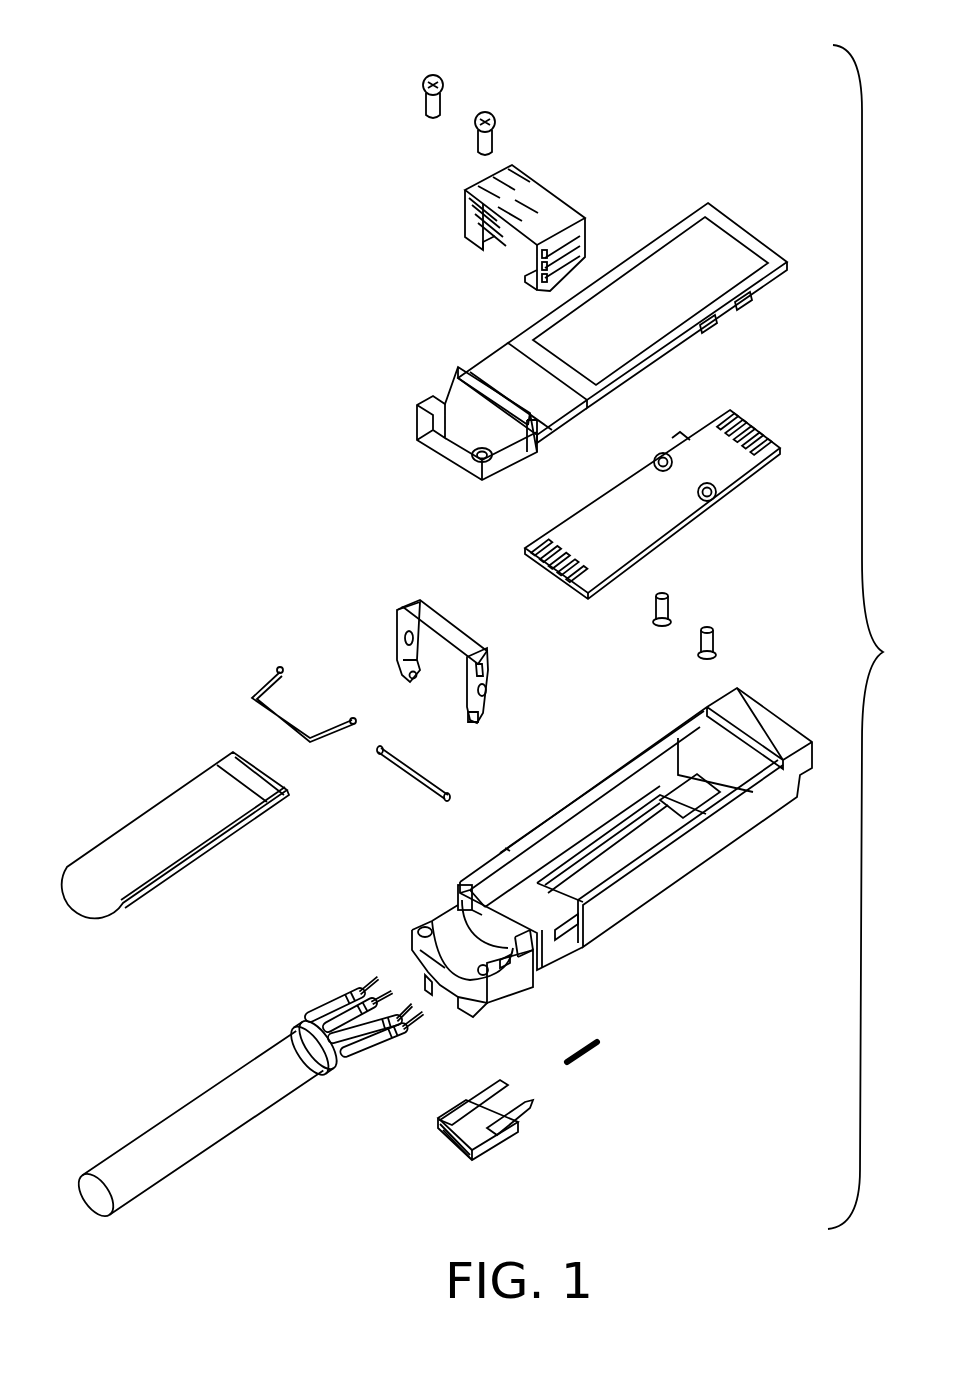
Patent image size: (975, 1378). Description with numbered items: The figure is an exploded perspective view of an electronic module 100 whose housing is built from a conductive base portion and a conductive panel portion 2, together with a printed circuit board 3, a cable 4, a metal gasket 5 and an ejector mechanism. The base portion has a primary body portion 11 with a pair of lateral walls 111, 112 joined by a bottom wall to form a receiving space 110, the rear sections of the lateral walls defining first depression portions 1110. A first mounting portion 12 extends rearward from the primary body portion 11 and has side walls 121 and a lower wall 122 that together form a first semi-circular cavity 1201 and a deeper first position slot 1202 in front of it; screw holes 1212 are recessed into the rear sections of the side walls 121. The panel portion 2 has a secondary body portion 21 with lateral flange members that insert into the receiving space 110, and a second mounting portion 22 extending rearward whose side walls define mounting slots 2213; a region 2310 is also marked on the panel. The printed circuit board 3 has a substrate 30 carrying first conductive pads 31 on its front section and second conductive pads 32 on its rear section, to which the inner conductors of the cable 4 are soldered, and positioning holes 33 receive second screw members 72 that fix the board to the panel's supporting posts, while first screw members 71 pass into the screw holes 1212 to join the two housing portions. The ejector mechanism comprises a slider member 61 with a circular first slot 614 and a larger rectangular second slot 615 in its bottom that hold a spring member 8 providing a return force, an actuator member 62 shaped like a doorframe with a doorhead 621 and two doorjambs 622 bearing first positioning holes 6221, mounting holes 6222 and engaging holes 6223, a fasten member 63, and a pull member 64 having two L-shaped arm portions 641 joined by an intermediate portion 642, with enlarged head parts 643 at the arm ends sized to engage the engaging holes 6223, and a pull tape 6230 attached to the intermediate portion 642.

The electronic module 100 is at (886, 637).
The primary body portion 11 is at (647, 832).
The receiving space 110 is at (627, 837).
The lateral wall 111 is at (707, 813).
The first depression portion 1110 is at (555, 937).
The lateral wall 112 is at (632, 762).
The first mounting portion 12 is at (459, 970).
The side wall 121 is at (502, 968).
The lower wall 122 is at (485, 993).
The first semi-circular cavity 1201 is at (443, 958).
The first position slot 1202 is at (473, 950).
The screw hole 1212 is at (427, 930).
The panel portion 2 is at (609, 306).
The secondary body portion 21 is at (705, 233).
The second mounting portion 22 is at (456, 425).
The mounting slot 2213 is at (467, 450).
The stepped portion 2310 is at (507, 370).
The printed circuit board 3 is at (651, 481).
The substrate 30 is at (677, 530).
The first conductive pads 31 is at (748, 425).
The second conductive pads 32 is at (543, 540).
The positioning hole 33 is at (720, 487).
The cable 4 is at (250, 1142).
The metal gasket 5 is at (568, 168).
The slider member 61 is at (496, 1140).
The first slot 614 is at (473, 1118).
The second slot 615 is at (520, 1102).
The actuator member 62 is at (494, 657).
The doorhead 621 is at (433, 620).
The doorjamb 622 is at (490, 653).
The first positioning hole 6221 is at (483, 685).
The mounting hole 6222 is at (477, 713).
The engaging hole 6223 is at (480, 670).
The pull tape 6230 is at (153, 805).
The fasten member 63 is at (397, 790).
The pull member 64 is at (280, 711).
The arm portion 641 is at (337, 730).
The intermediate portion 642 is at (277, 718).
The head part 643 is at (273, 665).
The first screw member 71 is at (462, 66).
The second screw member 72 is at (725, 624).
The spring member 8 is at (597, 1060).